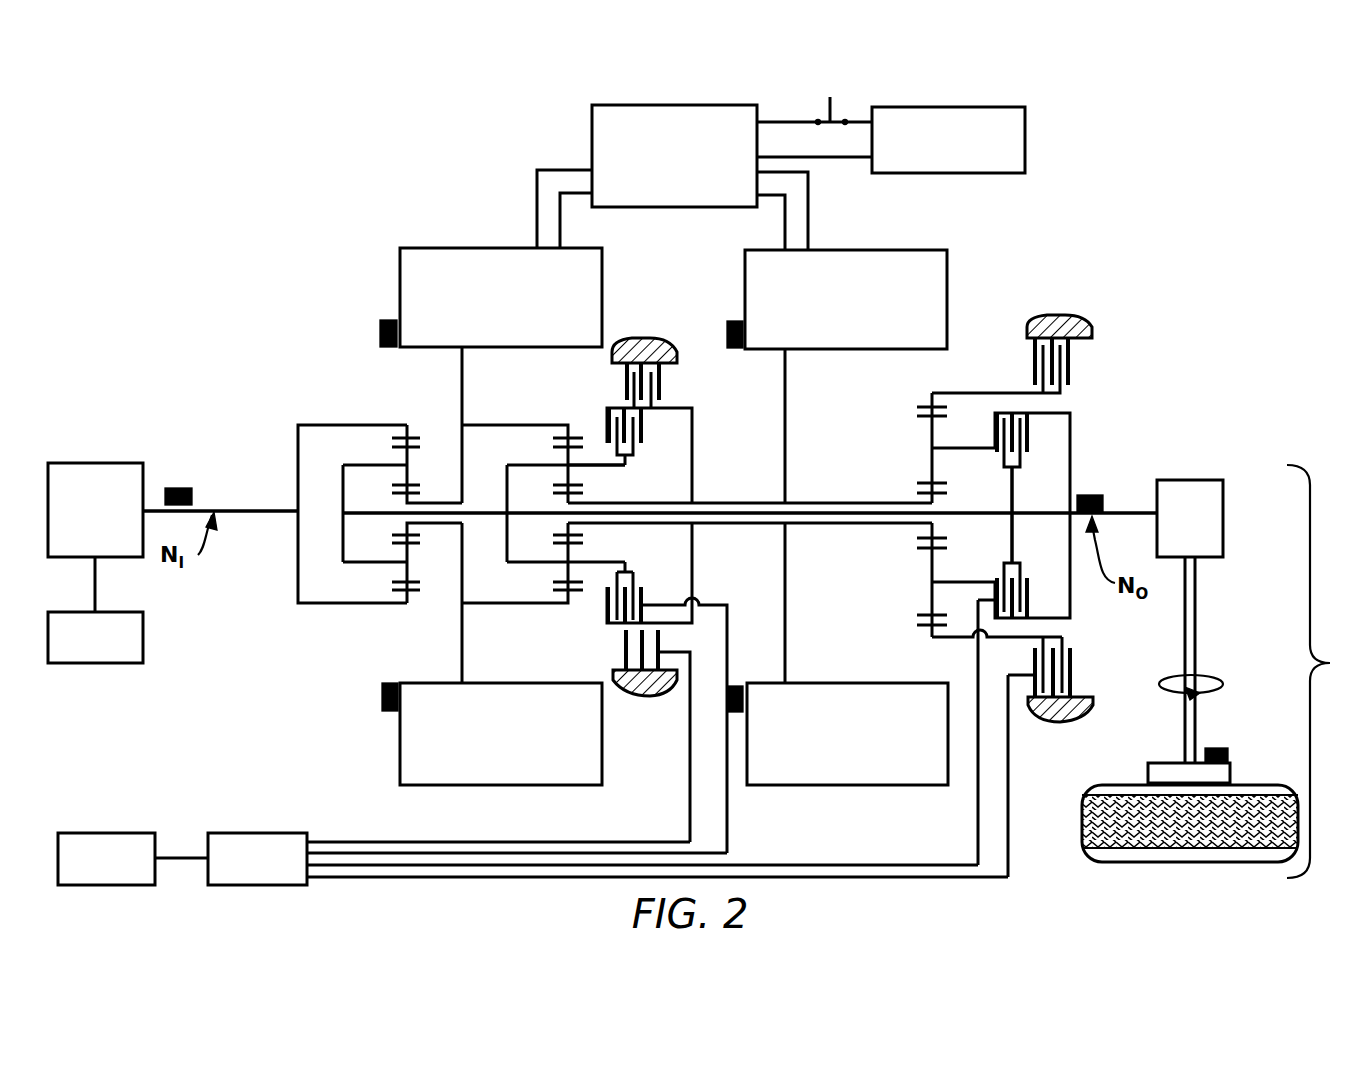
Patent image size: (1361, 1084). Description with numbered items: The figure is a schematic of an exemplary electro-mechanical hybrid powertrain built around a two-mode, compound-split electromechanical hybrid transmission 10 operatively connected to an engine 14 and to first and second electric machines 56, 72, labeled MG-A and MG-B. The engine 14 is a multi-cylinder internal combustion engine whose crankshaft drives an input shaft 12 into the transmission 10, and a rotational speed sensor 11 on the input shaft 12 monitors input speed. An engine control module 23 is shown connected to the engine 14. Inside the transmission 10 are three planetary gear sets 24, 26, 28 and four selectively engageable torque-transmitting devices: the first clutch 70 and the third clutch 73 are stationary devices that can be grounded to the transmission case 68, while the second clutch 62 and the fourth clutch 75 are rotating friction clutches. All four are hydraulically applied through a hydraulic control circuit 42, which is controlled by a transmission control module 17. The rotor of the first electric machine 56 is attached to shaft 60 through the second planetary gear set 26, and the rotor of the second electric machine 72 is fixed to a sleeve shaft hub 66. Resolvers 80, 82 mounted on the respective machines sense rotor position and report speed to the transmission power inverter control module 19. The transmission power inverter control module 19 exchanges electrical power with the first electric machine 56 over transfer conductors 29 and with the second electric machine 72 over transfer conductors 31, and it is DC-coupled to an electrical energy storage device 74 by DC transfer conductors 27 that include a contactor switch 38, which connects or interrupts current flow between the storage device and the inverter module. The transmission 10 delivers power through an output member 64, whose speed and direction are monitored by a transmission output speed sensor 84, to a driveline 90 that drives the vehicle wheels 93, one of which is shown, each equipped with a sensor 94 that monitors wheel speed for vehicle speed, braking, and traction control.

The electromechanical hybrid transmission 10 is at (357, 208).
The rotational speed sensor 11 is at (178, 488).
The input shaft 12 is at (257, 508).
The engine 14 is at (103, 463).
The transmission control module 17 is at (100, 833).
The transmission power inverter control module 19 is at (592, 120).
The engine control module 23 is at (143, 655).
The first planetary gear set 24 is at (397, 420).
The second planetary gear set 26 is at (562, 420).
The DC transfer conductors 27 is at (773, 120).
The third planetary gear set 28 is at (922, 390).
The transfer conductors 29 is at (537, 205).
The transfer conductors 31 is at (810, 205).
The contactor switch 38 is at (833, 102).
The hydraulic control circuit 42 is at (225, 833).
The first electric machine 56 is at (400, 280).
The shaft 60 is at (985, 512).
The clutch C2 62 is at (1040, 452).
The output member 64 is at (1126, 510).
The sleeve shaft hub 66 is at (822, 503).
The transmission case 68 is at (640, 338).
The clutch C1 70 is at (1025, 355).
The second electric machine 72 is at (948, 268).
The clutch C3 73 is at (672, 386).
The electrical energy storage device 74 is at (1030, 128).
The clutch C4 75 is at (660, 433).
The resolver 80 is at (380, 337).
The resolver 82 is at (736, 320).
The transmission output speed sensor 84 is at (1090, 495).
The driveline 90 is at (1331, 663).
The vehicle wheel 93 is at (1148, 775).
The wheel speed sensor 94 is at (1218, 748).